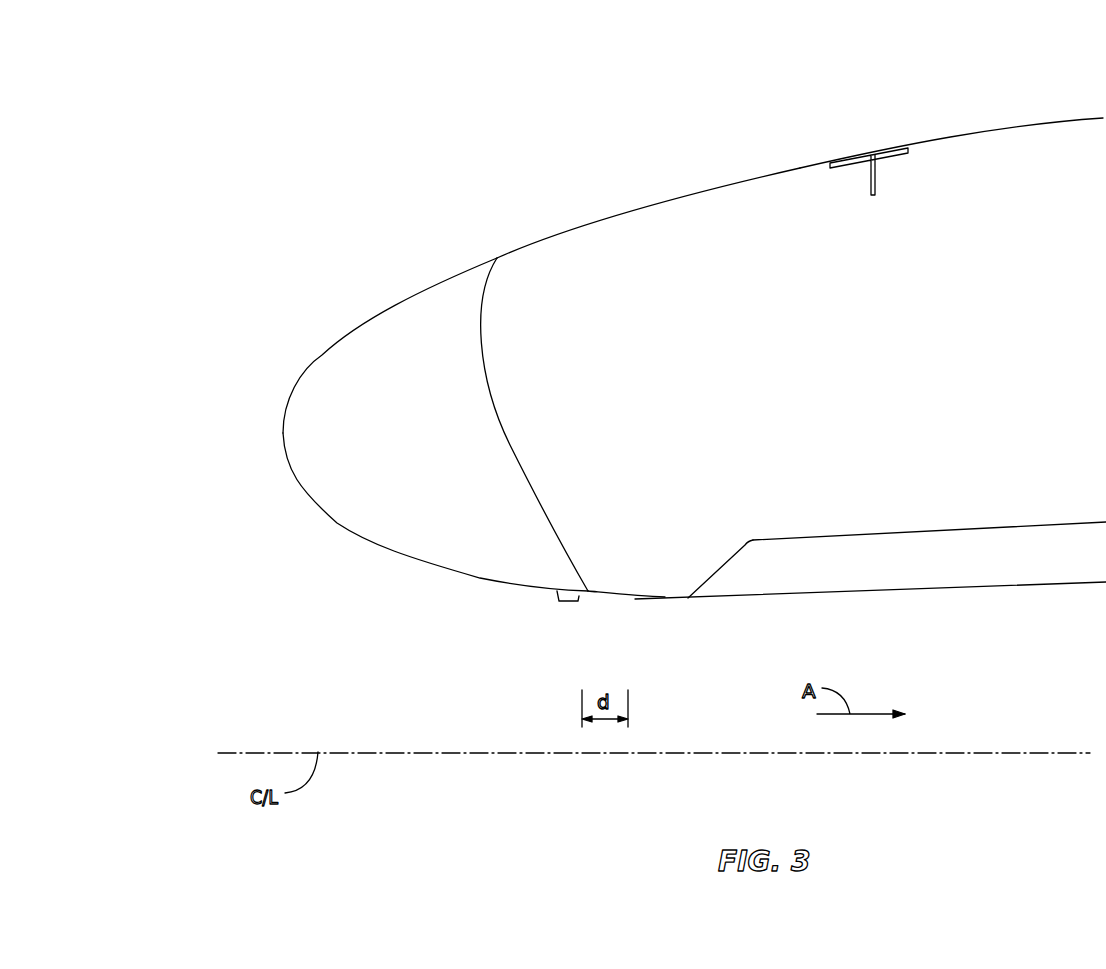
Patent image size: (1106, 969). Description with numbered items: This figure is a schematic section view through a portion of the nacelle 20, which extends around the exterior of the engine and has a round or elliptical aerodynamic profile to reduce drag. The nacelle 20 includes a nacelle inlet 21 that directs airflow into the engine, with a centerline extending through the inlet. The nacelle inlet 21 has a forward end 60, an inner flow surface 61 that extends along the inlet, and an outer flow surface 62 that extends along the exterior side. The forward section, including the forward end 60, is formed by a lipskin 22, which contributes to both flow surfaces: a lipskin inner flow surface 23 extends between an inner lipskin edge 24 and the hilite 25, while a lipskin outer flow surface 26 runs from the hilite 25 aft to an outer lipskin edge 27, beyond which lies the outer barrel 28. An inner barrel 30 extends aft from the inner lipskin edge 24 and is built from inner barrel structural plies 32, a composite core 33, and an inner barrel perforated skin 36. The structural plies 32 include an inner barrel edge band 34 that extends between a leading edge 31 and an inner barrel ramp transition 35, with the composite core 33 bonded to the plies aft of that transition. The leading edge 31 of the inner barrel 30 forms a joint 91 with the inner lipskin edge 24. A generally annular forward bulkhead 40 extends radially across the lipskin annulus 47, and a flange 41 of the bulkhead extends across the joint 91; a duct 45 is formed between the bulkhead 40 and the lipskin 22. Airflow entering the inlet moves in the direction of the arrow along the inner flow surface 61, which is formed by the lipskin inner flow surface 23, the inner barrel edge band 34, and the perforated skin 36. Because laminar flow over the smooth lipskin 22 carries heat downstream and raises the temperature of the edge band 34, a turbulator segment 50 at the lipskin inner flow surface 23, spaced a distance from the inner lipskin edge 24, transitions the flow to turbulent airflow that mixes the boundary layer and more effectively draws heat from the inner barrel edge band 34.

The nacelle 20 is at (700, 100).
The nacelle inlet 21 is at (258, 677).
The lipskin 22 is at (322, 355).
The lipskin inner flow surface 23 is at (412, 562).
The inner lipskin edge 24 is at (633, 600).
The hilite 25 is at (284, 440).
The lipskin outer flow surface 26 is at (581, 227).
The outer lipskin edge 27 is at (872, 152).
The outer barrel 28 is at (988, 130).
The inner barrel 30 is at (865, 600).
The leading edge 31 is at (642, 600).
The inner barrel structural plies 32 is at (860, 538).
The composite core 33 is at (997, 555).
The inner barrel edge band 34 is at (662, 600).
The inner barrel ramp transition 35 is at (690, 597).
The inner barrel perforated skin 36 is at (980, 597).
The forward bulkhead 40 is at (510, 445).
The flange 41 is at (628, 596).
The duct 45 is at (405, 320).
The lipskin annulus 47 is at (550, 367).
The turbulator segment 50 is at (570, 600).
The forward end 60 is at (252, 419).
The inner flow surface 61 is at (540, 592).
The outer flow surface 62 is at (453, 277).
The joint 91 is at (639, 622).